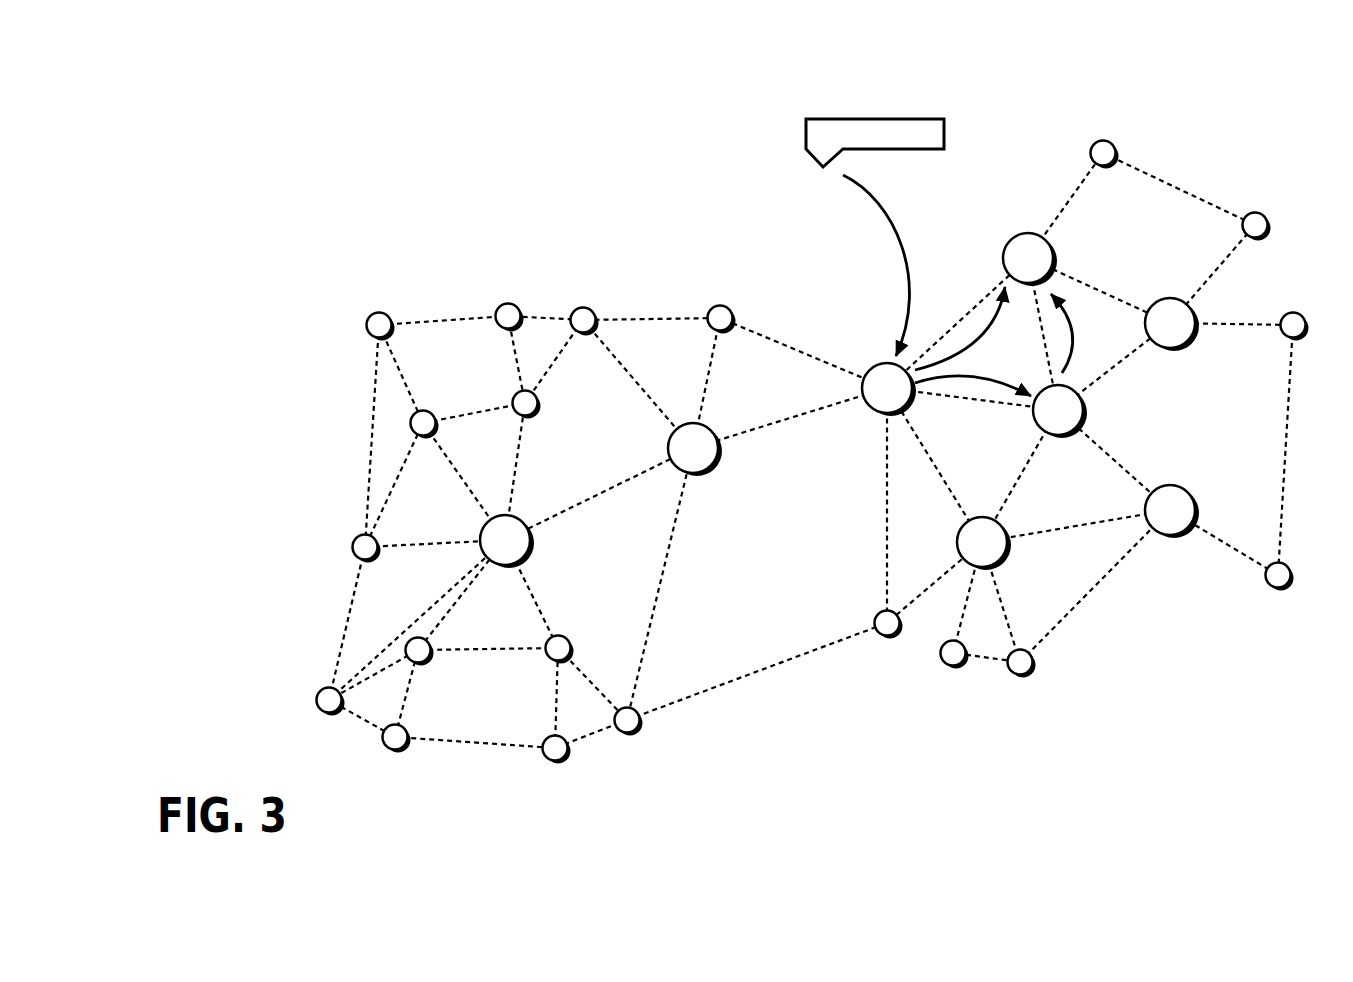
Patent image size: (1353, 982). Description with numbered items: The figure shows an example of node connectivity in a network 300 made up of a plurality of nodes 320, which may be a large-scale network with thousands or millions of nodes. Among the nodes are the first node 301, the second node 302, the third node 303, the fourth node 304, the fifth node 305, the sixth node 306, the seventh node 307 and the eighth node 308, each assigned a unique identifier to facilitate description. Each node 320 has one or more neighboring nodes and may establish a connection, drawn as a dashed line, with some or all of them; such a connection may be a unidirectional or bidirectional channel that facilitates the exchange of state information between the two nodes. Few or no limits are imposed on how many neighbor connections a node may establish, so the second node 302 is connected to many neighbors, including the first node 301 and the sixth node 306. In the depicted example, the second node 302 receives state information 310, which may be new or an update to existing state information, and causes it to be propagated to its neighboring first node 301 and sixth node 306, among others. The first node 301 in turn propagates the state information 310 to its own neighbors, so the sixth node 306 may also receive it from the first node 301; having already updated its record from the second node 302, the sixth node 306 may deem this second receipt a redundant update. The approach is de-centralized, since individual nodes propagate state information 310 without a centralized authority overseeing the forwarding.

The network 300 is at (211, 202).
The state information 310 is at (806, 137).
The node N2 302 is at (881, 362).
The node N6 306 is at (1007, 243).
The node N1 301 is at (1086, 408).
The node N5 305 is at (1192, 345).
The node 320 is at (1273, 232).
The node N7 307 is at (718, 463).
The node N8 308 is at (533, 547).
The node N3 303 is at (1007, 553).
The node N4 304 is at (1178, 537).